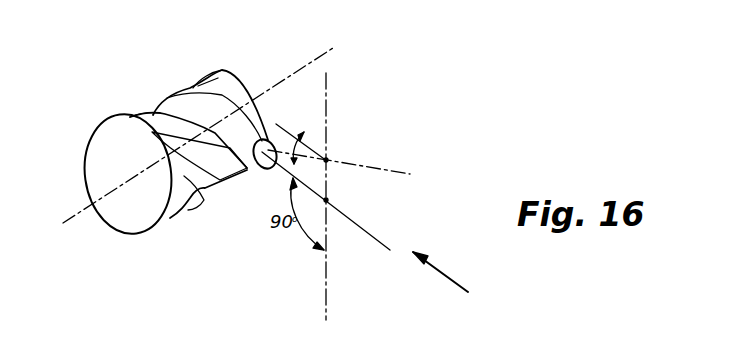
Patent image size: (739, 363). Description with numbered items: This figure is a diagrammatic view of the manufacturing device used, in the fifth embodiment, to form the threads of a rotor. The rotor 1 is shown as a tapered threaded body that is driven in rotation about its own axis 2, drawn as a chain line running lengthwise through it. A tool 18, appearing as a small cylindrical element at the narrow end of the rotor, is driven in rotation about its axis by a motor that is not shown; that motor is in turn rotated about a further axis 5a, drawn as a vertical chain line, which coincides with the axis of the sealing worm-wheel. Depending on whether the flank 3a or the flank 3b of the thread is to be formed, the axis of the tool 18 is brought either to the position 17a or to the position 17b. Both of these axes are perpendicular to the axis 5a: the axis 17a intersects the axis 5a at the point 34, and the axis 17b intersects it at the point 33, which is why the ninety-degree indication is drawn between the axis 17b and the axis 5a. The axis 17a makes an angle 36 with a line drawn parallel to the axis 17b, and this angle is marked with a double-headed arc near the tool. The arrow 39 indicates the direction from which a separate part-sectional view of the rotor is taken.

The rotor 1 is at (128, 128).
The axis 2 is at (75, 217).
The flank 3a is at (140, 113).
The flank 3b is at (152, 115).
The tool 18 is at (257, 128).
The angle 36 is at (309, 124).
The intersection point 34 is at (327, 161).
The axis 17a is at (380, 171).
The intersection point 33 is at (326, 200).
The axis 17b is at (371, 237).
The axis 5a is at (324, 281).
The arrow 39 is at (447, 272).